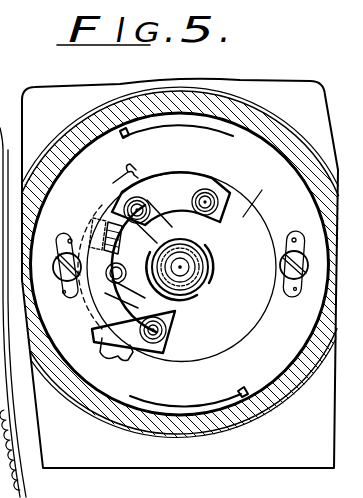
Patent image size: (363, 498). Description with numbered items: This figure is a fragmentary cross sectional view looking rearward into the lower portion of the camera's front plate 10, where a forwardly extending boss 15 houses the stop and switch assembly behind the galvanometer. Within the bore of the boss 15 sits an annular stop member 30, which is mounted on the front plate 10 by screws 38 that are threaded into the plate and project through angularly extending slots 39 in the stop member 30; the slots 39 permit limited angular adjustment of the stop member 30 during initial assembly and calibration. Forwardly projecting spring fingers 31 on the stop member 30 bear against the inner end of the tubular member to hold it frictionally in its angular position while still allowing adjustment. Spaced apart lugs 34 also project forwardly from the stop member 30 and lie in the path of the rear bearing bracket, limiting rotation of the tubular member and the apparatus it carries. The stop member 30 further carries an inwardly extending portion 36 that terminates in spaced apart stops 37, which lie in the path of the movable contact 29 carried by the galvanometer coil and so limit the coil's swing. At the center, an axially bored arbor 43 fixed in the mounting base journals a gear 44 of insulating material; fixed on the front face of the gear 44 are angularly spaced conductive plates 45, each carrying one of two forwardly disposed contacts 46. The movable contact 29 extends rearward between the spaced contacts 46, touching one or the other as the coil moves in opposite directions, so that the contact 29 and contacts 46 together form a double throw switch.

The front plate 10 is at (278, 90).
The boss 15 is at (286, 131).
The contact 29 is at (113, 292).
The annular stop member 30 is at (245, 216).
The spring fingers 31 is at (146, 134).
The lugs 34 is at (113, 183).
The inwardly extending portion 36 is at (108, 305).
The stops 37 is at (108, 221).
The screws 38 is at (63, 290).
The slots 39 is at (66, 237).
The arbor 43 is at (200, 266).
The gear 44 is at (250, 310).
The conductive plates 45 is at (197, 184).
The contacts 46 is at (156, 222).